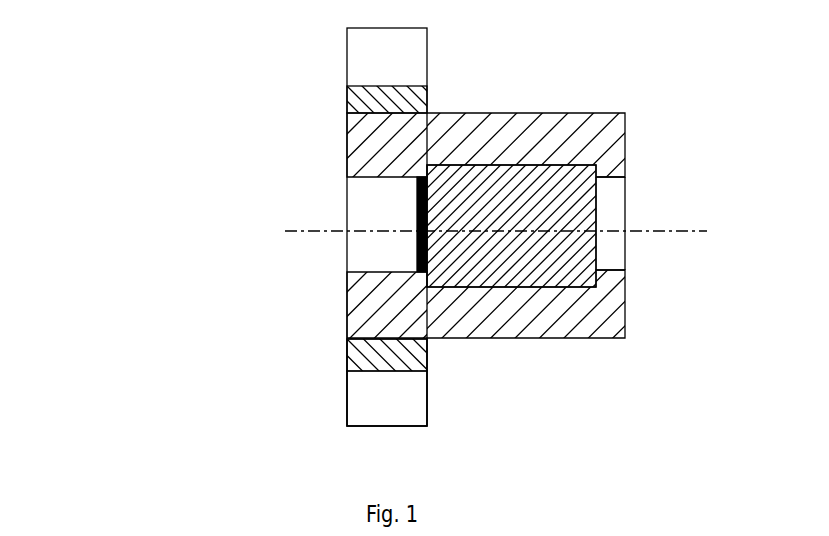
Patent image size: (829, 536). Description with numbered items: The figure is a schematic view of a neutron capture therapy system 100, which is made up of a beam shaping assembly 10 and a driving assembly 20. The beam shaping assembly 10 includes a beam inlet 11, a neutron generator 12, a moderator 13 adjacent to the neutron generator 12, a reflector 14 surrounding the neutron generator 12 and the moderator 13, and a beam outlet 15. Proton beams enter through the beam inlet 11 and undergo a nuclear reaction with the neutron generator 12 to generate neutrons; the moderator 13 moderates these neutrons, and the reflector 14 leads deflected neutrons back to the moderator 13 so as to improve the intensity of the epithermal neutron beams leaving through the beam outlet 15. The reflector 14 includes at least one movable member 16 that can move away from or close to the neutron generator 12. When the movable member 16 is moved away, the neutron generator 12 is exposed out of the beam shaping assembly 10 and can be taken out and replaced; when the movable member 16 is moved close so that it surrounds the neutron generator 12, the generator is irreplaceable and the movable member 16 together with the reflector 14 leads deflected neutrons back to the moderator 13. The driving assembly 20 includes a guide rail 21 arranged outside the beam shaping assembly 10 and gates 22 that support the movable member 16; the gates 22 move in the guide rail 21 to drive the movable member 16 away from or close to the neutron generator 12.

The neutron capture therapy system 100 is at (397, 246).
The beam shaping assembly 10 is at (548, 132).
The beam inlet 11 is at (348, 260).
The neutron generator 12 is at (416, 264).
The moderator 13 is at (550, 260).
The reflector 14 is at (515, 316).
The beam outlet 15 is at (618, 217).
The movable member 16 is at (395, 137).
The driving assembly 20 is at (258, 395).
The guide rail 21 is at (363, 388).
The gates 22 is at (352, 377).